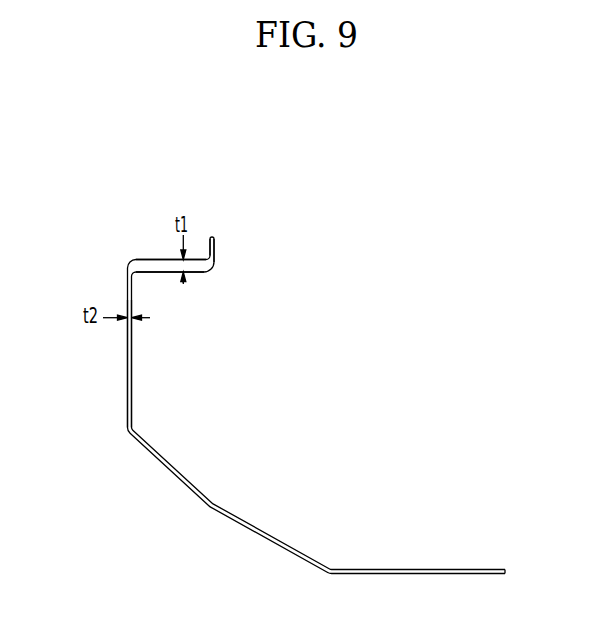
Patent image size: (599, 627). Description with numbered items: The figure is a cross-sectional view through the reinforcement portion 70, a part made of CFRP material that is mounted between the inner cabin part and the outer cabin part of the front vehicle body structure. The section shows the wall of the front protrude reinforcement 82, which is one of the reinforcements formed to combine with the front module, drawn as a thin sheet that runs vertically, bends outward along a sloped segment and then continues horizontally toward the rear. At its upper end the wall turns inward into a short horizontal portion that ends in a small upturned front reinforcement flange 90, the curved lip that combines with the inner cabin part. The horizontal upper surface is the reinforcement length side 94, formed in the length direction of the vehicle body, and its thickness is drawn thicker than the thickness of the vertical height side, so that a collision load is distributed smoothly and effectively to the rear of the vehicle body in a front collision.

The reinforcement portion 70 is at (115, 428).
The front protrude reinforcement 82 is at (132, 383).
The front reinforcement flange 90 is at (214, 243).
The reinforcement length side 94 is at (157, 273).